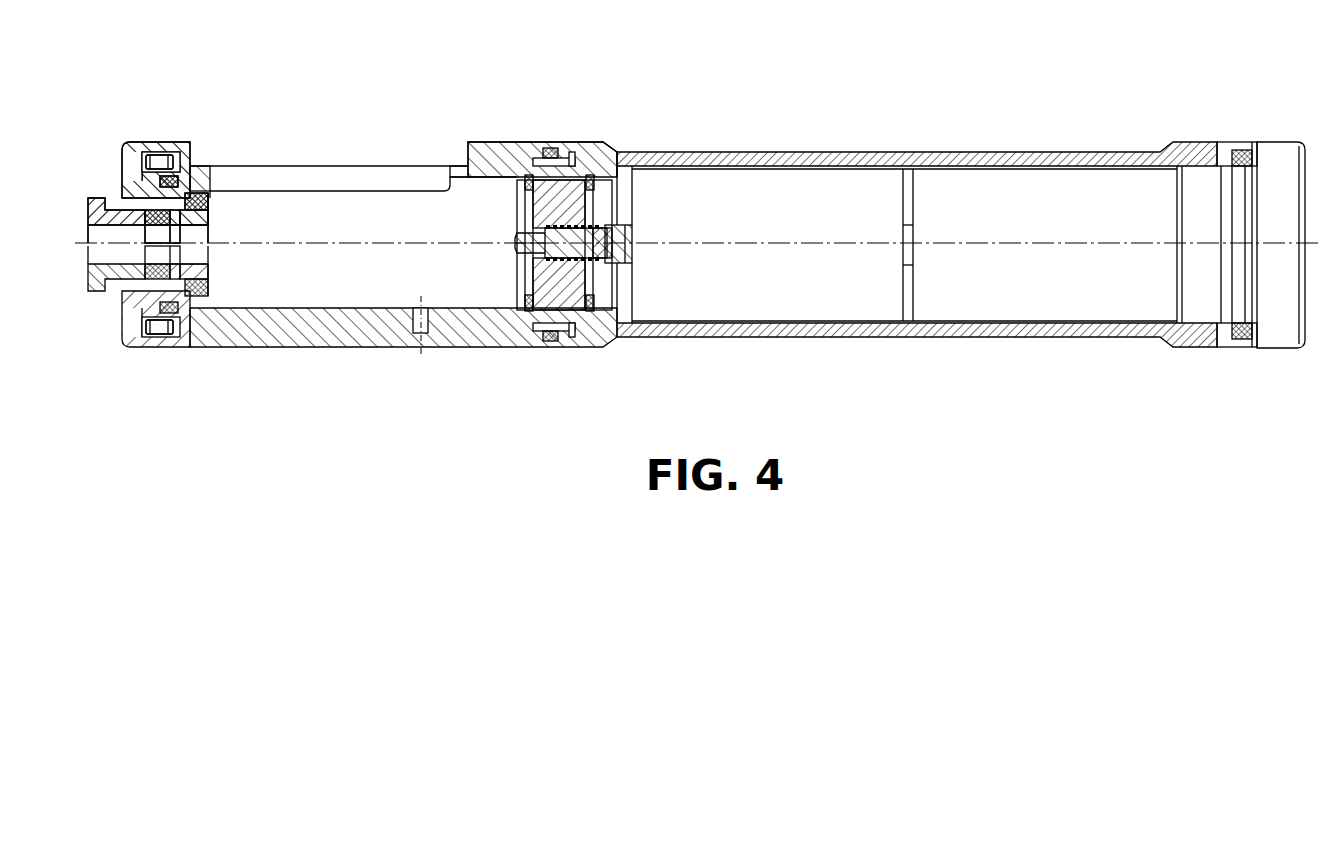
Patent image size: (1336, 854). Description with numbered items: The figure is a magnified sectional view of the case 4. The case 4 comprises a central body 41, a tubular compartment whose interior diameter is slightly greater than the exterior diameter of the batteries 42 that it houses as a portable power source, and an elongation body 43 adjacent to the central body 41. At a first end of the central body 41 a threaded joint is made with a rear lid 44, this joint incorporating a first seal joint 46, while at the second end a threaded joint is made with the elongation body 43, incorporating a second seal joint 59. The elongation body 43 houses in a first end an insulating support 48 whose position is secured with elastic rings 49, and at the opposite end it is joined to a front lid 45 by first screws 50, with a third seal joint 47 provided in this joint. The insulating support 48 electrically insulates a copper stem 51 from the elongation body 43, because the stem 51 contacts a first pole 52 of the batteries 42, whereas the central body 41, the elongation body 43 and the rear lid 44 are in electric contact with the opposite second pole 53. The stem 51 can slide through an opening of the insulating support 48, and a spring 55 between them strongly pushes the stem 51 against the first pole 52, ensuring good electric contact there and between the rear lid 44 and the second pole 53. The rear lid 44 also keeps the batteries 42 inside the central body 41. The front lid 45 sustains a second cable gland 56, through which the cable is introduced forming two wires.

The case 4 is at (727, 140).
The central body 41 is at (835, 152).
The batteries 42 is at (812, 275).
The elongation body 43 is at (473, 208).
The rear lid 44 is at (1273, 303).
The front lid 45 is at (147, 160).
The first seal joint 46 is at (1240, 150).
The third seal joint 47 is at (192, 167).
The insulating support 48 is at (546, 310).
The elastic rings 49 is at (528, 188).
The first screws 50 is at (130, 330).
The copper stem 51 is at (625, 240).
The first pole 52 is at (630, 255).
The second pole 53 is at (1177, 237).
The spring 55 is at (562, 265).
The second cable gland 56 is at (102, 203).
The second seal joint 59 is at (554, 150).